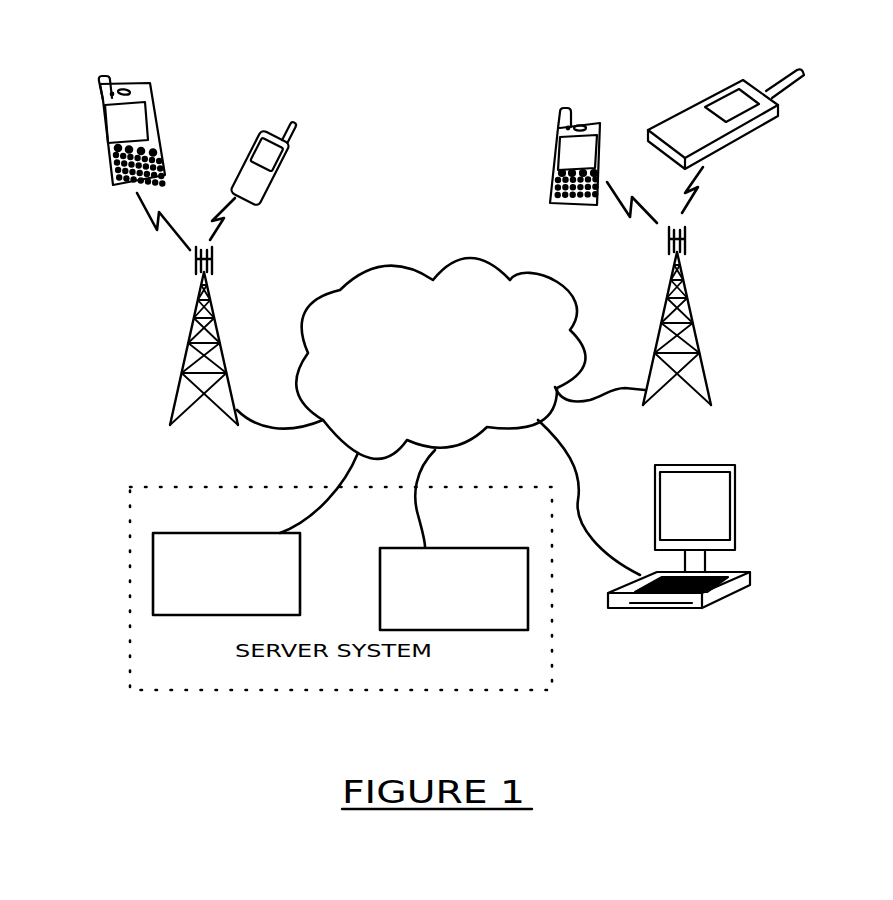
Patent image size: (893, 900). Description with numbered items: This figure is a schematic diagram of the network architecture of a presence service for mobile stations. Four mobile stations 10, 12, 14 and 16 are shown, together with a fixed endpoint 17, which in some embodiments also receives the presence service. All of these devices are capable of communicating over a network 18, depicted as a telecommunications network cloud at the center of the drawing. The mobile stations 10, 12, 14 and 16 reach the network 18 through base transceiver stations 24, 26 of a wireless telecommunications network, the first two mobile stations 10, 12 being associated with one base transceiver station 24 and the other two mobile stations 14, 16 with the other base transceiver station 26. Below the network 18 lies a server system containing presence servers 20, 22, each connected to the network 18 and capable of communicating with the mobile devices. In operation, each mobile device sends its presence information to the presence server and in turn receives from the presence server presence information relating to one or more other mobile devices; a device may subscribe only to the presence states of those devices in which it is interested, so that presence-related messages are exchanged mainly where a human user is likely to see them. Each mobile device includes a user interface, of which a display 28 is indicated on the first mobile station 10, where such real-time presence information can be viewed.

The mobile station 10 is at (132, 83).
The mobile station 12 is at (252, 137).
The mobile station 14 is at (557, 140).
The mobile station 16 is at (687, 108).
The fixed endpoint 17 is at (663, 608).
The network 18 is at (450, 262).
The presence server 20 is at (153, 578).
The presence server 22 is at (489, 630).
The base transceiver station 24 is at (182, 369).
The base transceiver station 26 is at (700, 346).
The display 28 is at (108, 127).